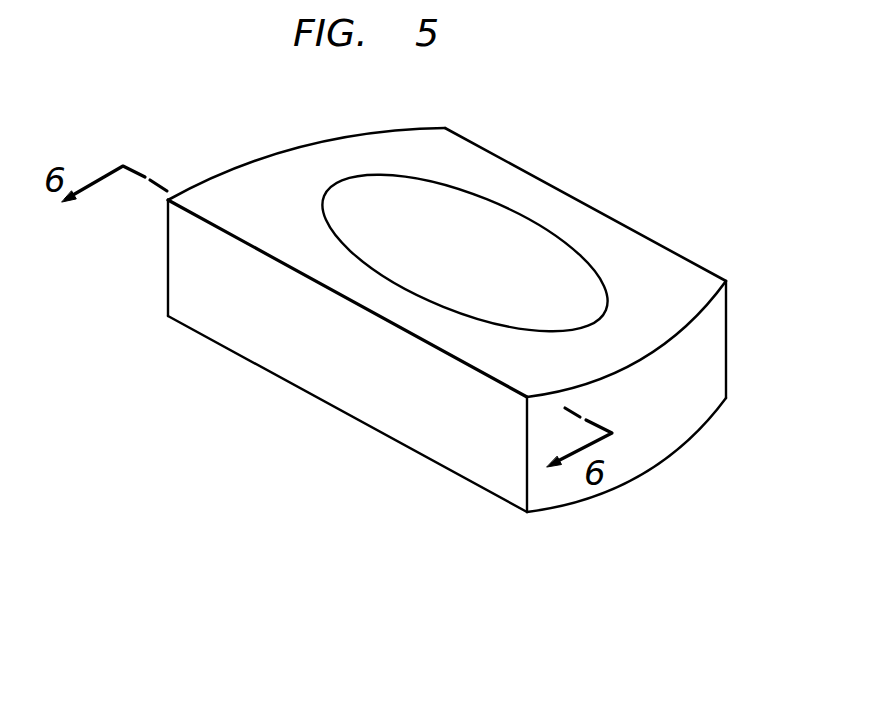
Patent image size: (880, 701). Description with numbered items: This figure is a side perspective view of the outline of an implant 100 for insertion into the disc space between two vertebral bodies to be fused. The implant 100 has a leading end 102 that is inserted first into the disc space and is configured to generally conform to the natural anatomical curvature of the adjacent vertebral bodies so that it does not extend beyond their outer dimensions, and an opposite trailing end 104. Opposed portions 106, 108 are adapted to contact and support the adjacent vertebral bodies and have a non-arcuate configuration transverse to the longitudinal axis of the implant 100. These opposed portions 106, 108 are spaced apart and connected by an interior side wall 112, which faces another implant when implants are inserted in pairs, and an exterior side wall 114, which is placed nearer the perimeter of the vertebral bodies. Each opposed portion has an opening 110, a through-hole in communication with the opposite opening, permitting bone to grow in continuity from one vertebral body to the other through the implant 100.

The implant 100 is at (655, 152).
The leading end 102 is at (276, 151).
The trailing end 104 is at (650, 407).
The opposed portion 106 is at (440, 150).
The opposed portion 108 is at (397, 443).
The opening 110 is at (478, 255).
The interior side wall 112 is at (318, 352).
The exterior side wall 114 is at (648, 236).